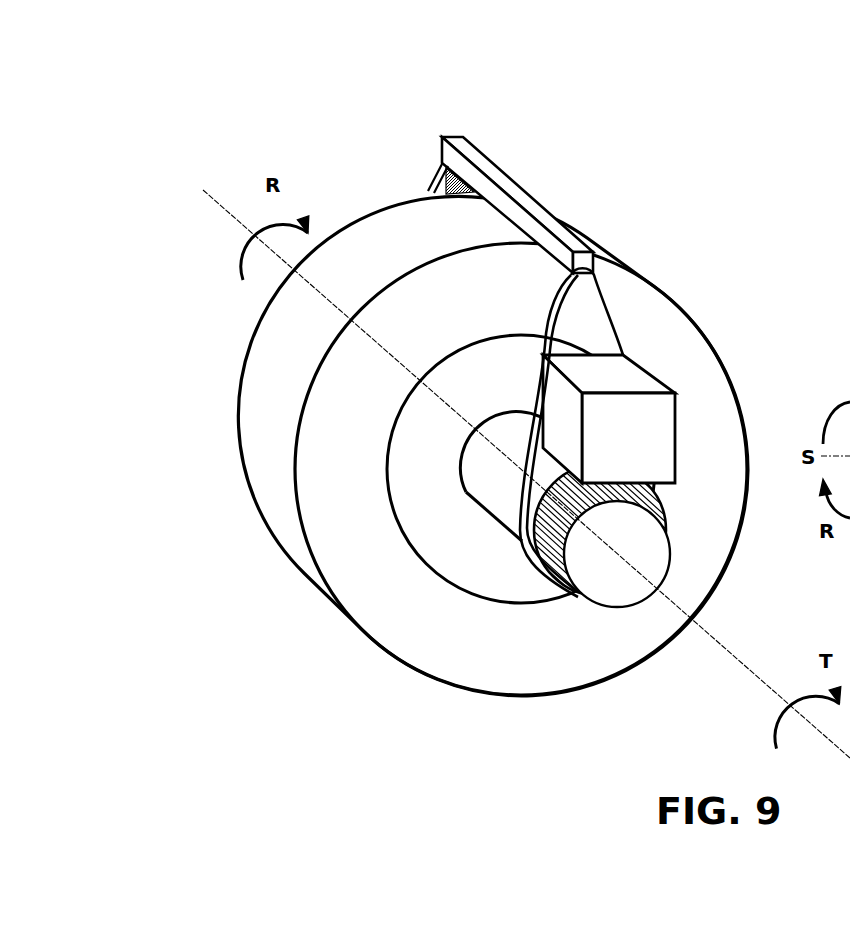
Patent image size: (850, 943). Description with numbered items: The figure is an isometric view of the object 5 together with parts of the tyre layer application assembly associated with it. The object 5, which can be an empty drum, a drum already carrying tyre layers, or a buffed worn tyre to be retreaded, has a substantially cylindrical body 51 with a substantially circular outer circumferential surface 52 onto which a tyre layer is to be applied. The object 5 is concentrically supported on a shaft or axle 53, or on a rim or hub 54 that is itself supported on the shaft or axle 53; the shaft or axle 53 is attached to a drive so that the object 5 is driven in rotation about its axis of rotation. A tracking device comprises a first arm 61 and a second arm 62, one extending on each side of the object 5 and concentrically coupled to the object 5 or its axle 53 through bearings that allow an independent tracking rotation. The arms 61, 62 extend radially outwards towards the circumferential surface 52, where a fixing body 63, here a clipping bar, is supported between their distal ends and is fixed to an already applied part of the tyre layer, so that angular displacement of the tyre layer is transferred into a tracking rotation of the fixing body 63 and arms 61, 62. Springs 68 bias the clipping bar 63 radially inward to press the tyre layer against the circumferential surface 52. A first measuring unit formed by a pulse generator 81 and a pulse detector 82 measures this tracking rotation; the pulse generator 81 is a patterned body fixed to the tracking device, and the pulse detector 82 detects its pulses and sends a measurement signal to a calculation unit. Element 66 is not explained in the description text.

The object 5 is at (234, 139).
The cylindrical body 51 is at (362, 602).
The outer circumferential surface 52 is at (315, 588).
The shaft or axle 53 is at (492, 492).
The rim or hub 54 is at (420, 515).
The first arm 61 is at (628, 302).
The second arm 62 is at (409, 138).
The fixing body 63 is at (495, 172).
The arched guides 66 is at (430, 181).
The springs 68 is at (432, 188).
The pulse generator 81 is at (640, 592).
The pulse detector 82 is at (668, 423).